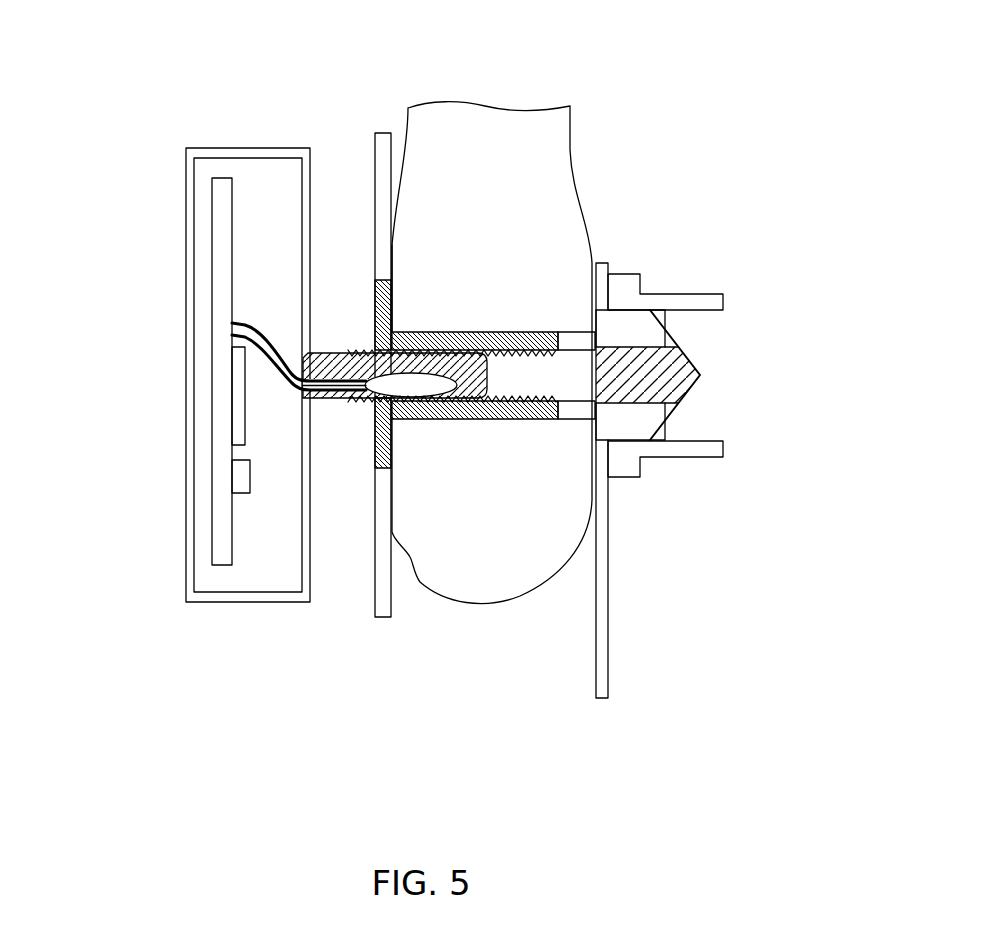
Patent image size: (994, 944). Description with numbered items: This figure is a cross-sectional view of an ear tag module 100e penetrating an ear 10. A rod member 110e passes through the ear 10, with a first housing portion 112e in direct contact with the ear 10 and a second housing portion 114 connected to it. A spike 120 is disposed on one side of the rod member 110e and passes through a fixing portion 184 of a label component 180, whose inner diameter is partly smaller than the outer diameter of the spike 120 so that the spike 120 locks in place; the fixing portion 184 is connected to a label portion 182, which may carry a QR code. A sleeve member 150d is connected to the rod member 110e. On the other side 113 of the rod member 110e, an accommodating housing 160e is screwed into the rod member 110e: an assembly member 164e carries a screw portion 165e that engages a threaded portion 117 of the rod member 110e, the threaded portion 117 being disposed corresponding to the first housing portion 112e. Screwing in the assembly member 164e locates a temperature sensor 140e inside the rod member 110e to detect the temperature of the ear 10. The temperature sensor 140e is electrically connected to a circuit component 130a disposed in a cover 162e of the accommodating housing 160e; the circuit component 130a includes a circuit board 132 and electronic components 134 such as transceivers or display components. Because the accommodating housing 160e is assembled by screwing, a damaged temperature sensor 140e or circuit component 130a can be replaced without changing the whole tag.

The ear 10 is at (492, 132).
The ear tag module 100e is at (744, 790).
The rod member 110e is at (471, 495).
The first housing portion 112e is at (527, 420).
The other side 113 is at (373, 340).
The second housing portion 114 is at (573, 420).
The threaded portion 117 is at (535, 350).
The spike 120 is at (677, 360).
The circuit component 130a is at (130, 371).
The circuit board 132 is at (220, 393).
The electronic component 134 is at (235, 418).
The temperature sensor 140e is at (387, 383).
The sleeve member 150d is at (382, 122).
The accommodating housing 160e is at (371, 436).
The cover 162e is at (265, 597).
The assembly member 164e is at (335, 398).
The screw portion 165e is at (357, 402).
The label component 180 is at (661, 527).
The label portion 182 is at (600, 650).
The fixing portion 184 is at (662, 452).